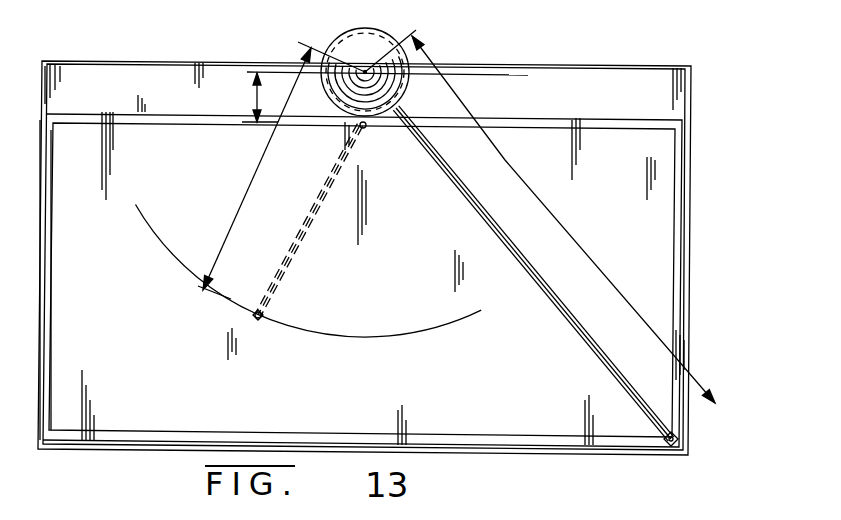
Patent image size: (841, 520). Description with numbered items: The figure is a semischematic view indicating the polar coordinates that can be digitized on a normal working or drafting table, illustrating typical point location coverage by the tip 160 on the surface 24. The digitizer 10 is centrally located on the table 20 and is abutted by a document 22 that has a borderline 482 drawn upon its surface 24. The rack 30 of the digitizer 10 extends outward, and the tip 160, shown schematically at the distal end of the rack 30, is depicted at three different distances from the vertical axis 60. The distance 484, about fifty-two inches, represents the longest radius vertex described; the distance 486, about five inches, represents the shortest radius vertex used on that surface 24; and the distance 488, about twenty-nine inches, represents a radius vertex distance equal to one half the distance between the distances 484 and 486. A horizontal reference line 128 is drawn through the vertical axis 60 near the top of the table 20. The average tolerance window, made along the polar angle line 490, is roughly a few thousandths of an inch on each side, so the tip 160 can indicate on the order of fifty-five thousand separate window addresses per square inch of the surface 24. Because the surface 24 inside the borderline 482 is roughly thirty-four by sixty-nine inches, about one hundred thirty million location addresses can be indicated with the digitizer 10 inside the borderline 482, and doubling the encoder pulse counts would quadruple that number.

The digitizer 10 is at (322, 42).
The table 20 is at (692, 195).
The document 22 is at (685, 240).
The surface 24 is at (170, 369).
The rack 30 is at (580, 340).
The vertical axis 60 is at (404, 81).
The reference line 128 is at (473, 77).
The tip 160 is at (678, 440).
The borderline 482 is at (673, 288).
The distance 484 is at (572, 233).
The distance 486 is at (253, 97).
The distance 488 is at (246, 197).
The polar angle line 490 is at (402, 338).